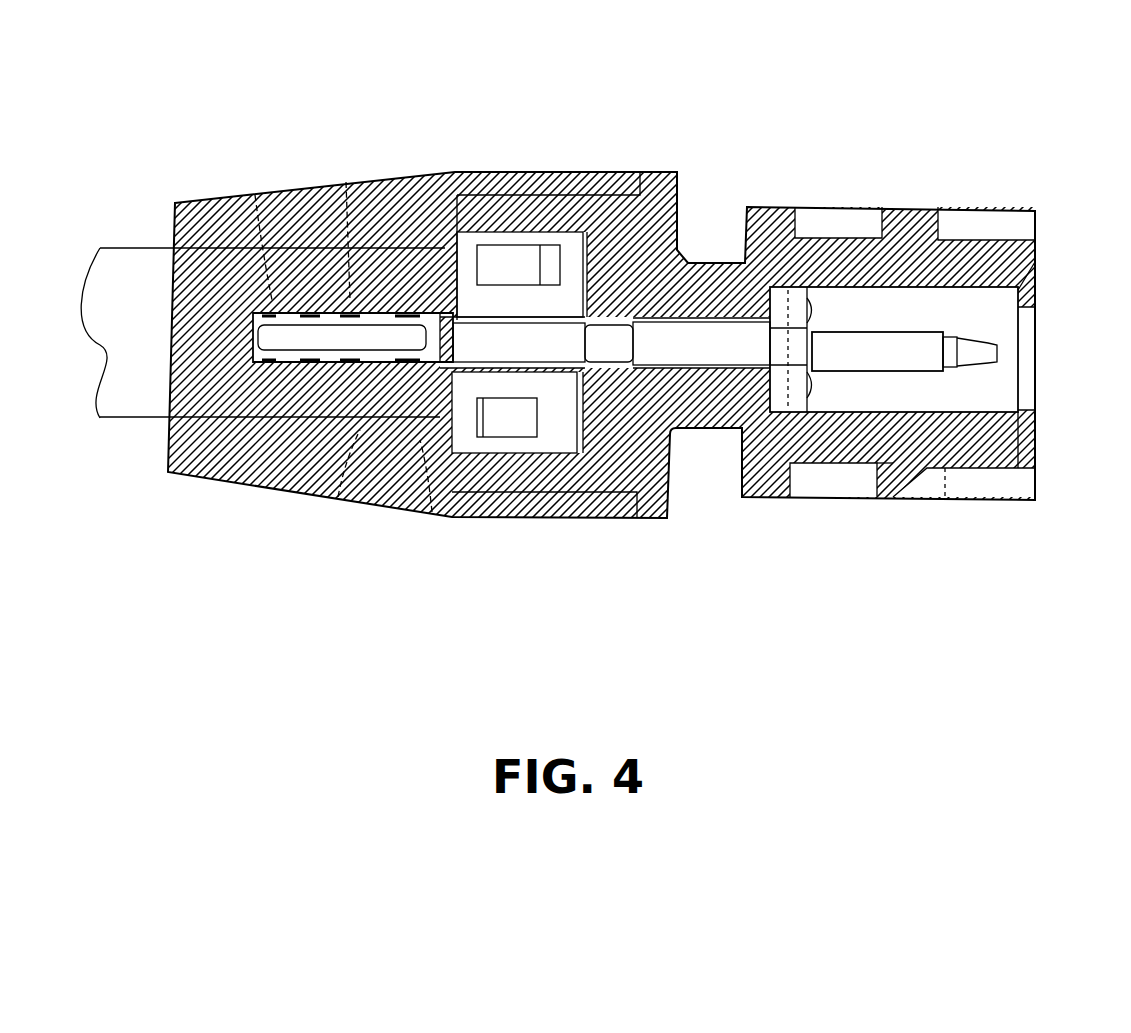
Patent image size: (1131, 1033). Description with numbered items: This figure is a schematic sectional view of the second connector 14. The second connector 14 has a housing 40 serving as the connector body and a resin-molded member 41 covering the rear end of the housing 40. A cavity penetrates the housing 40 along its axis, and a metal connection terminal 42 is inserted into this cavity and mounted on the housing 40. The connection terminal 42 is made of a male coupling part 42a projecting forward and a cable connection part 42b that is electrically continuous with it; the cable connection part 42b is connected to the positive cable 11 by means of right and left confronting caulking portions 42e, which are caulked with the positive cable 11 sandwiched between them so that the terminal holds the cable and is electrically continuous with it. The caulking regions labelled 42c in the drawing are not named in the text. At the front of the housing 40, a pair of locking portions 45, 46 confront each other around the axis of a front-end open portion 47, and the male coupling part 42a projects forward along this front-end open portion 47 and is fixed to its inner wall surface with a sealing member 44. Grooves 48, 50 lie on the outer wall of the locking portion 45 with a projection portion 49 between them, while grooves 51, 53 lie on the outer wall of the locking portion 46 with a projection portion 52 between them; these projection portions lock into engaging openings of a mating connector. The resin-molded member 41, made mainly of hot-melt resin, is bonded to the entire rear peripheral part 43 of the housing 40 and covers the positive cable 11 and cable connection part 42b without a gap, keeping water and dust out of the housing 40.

The positive cable 11 is at (132, 245).
The second connector 14 is at (503, 138).
The housing 40 is at (738, 466).
The resin-molded member 41 is at (345, 318).
The connection terminal 42 is at (900, 343).
The male coupling part 42a is at (943, 500).
The cable connection part 42b is at (250, 380).
The plunger groove 42c is at (346, 182).
The caulking portions 42e is at (432, 512).
The rear peripheral part 43 is at (598, 172).
The sealing member 44 is at (775, 430).
The locking portion 45 is at (1037, 267).
The locking portion 46 is at (1035, 450).
The front-end open portion 47 is at (1035, 322).
The groove 48 is at (987, 240).
The projection portion 49 is at (905, 275).
The groove 50 is at (820, 237).
The groove 51 is at (985, 500).
The projection portion 52 is at (885, 500).
The groove 53 is at (828, 480).